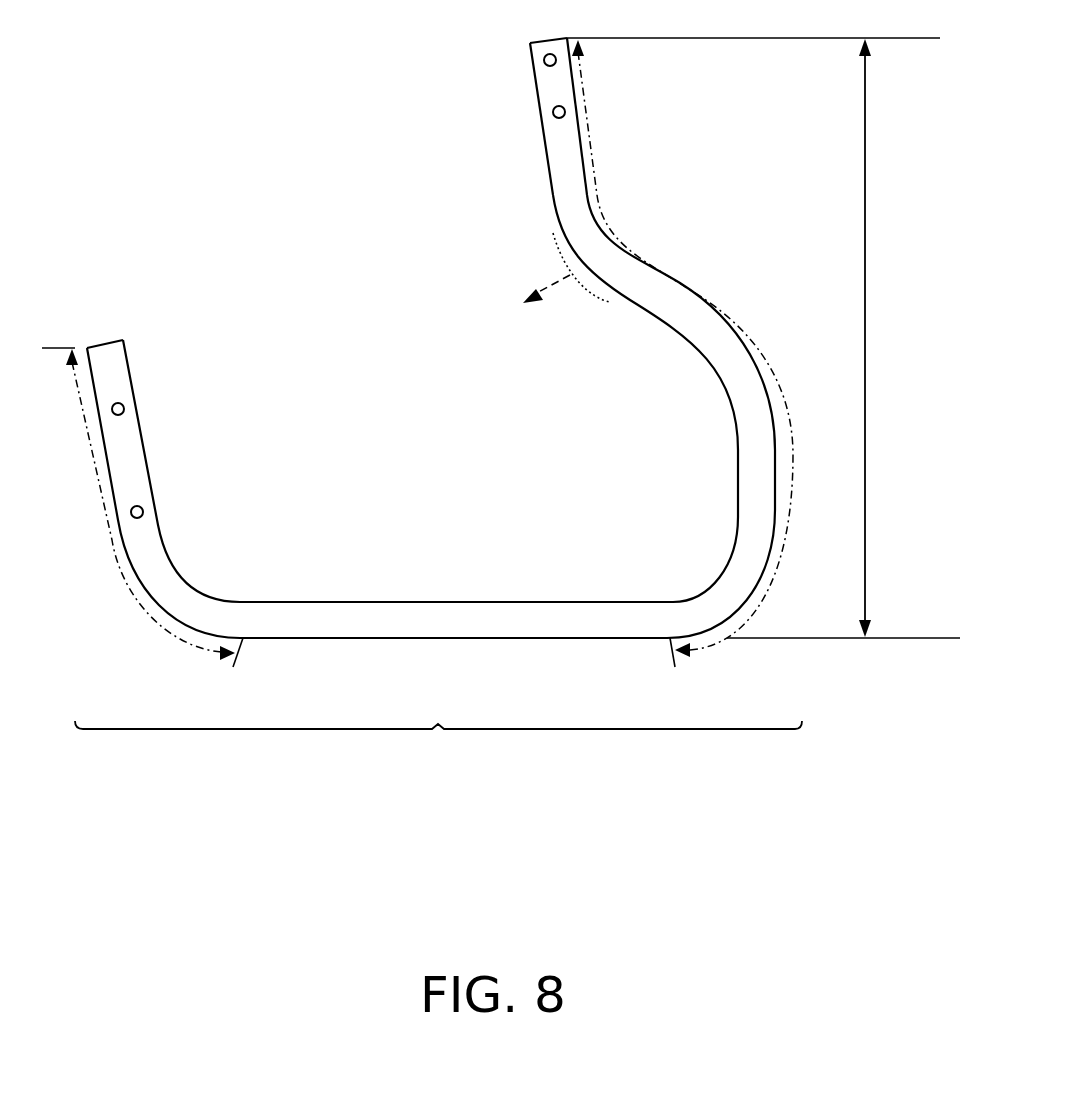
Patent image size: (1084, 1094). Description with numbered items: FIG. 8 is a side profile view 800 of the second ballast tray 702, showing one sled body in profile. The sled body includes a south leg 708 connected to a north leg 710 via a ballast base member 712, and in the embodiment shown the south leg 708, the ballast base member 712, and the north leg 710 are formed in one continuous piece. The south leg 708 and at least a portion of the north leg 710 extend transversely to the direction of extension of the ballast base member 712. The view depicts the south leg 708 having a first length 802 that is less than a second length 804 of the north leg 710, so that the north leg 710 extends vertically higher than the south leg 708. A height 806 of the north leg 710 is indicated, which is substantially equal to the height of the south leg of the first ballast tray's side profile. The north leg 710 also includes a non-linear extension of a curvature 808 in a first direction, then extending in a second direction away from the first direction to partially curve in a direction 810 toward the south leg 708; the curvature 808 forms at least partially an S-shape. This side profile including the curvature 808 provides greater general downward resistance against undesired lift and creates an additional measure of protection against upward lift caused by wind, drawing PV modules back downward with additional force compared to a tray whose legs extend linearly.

The second ballast tray 702 is at (272, 150).
The south leg 708 is at (123, 340).
The north leg 710 is at (530, 43).
The ballast base member 712 is at (477, 602).
The side profile view 800 is at (438, 701).
The first length 802 is at (127, 602).
The second length 804 is at (736, 325).
The height 806 is at (865, 192).
The curvature 808 is at (572, 270).
The direction 810 is at (570, 275).